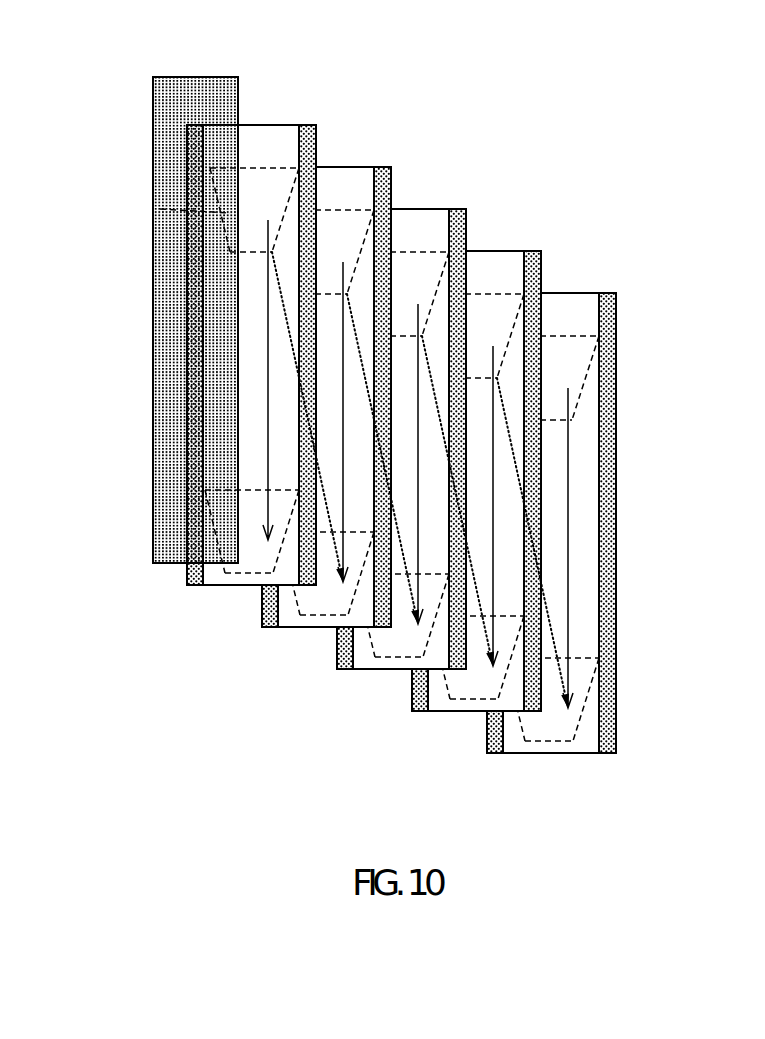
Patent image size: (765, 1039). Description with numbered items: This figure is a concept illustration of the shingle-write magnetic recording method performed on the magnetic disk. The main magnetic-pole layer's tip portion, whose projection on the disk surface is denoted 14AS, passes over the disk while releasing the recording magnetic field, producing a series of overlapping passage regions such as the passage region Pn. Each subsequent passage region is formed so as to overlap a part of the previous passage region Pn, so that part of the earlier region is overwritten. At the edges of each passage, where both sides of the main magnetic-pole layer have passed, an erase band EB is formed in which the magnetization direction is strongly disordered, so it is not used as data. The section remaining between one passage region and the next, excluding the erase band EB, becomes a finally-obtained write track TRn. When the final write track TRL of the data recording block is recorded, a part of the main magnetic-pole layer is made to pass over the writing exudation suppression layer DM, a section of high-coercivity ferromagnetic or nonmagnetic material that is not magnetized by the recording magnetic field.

The writing exudation suppression layer DM is at (195, 78).
The projection of the tip portion 14AS is at (153, 208).
The final write track TRL is at (298, 120).
The finally-obtained write track TRn is at (598, 288).
The erase band EB is at (306, 125).
The passage region Pn is at (505, 758).